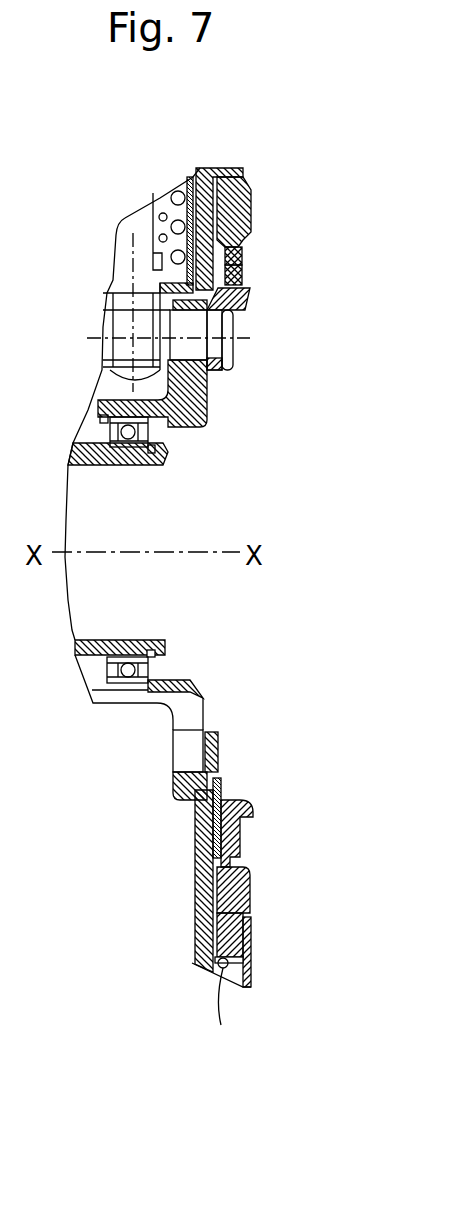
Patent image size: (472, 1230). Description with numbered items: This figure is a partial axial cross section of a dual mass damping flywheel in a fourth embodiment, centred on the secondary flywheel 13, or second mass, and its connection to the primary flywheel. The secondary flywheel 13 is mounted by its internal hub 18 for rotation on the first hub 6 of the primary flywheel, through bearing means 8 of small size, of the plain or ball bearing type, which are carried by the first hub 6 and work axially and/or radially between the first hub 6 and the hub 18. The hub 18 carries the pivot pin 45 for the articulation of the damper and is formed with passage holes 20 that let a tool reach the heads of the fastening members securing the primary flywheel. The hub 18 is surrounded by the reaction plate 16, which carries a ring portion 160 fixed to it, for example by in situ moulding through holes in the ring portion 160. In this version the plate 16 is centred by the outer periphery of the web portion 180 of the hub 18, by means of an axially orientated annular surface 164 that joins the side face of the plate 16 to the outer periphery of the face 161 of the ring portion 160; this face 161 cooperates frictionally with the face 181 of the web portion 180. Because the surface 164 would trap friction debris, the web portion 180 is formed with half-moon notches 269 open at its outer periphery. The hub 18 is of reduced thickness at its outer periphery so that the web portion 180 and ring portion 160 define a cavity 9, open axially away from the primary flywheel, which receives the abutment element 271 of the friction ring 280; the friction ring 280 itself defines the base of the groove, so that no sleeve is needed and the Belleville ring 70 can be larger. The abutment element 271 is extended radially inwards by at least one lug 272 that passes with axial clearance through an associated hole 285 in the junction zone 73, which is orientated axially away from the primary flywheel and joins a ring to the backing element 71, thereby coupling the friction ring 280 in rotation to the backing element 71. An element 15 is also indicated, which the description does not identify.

The first hub 6 is at (168, 458).
The bearing means 8 is at (150, 440).
The cavity 9 is at (224, 306).
The secondary flywheel 13 is at (266, 962).
The housing 15 is at (124, 212).
The reaction plate 16 is at (232, 166).
The internal hub 18 is at (200, 408).
The passage holes 20 is at (203, 698).
The pivot pin 45 is at (103, 327).
The Belleville ring 70 is at (241, 252).
The backing element 71 is at (247, 297).
The junction zone 73 is at (228, 314).
The ring portion 160 is at (232, 201).
The face of the ring portion 161 is at (217, 897).
The axially orientated annular surface 164 is at (214, 918).
The web portion 180 is at (196, 851).
The face of the web portion 181 is at (250, 889).
The notches 269 is at (190, 176).
The abutment element 271 is at (241, 268).
The lug 272 is at (221, 788).
The friction ring 280 is at (250, 900).
The hole 285 is at (173, 787).